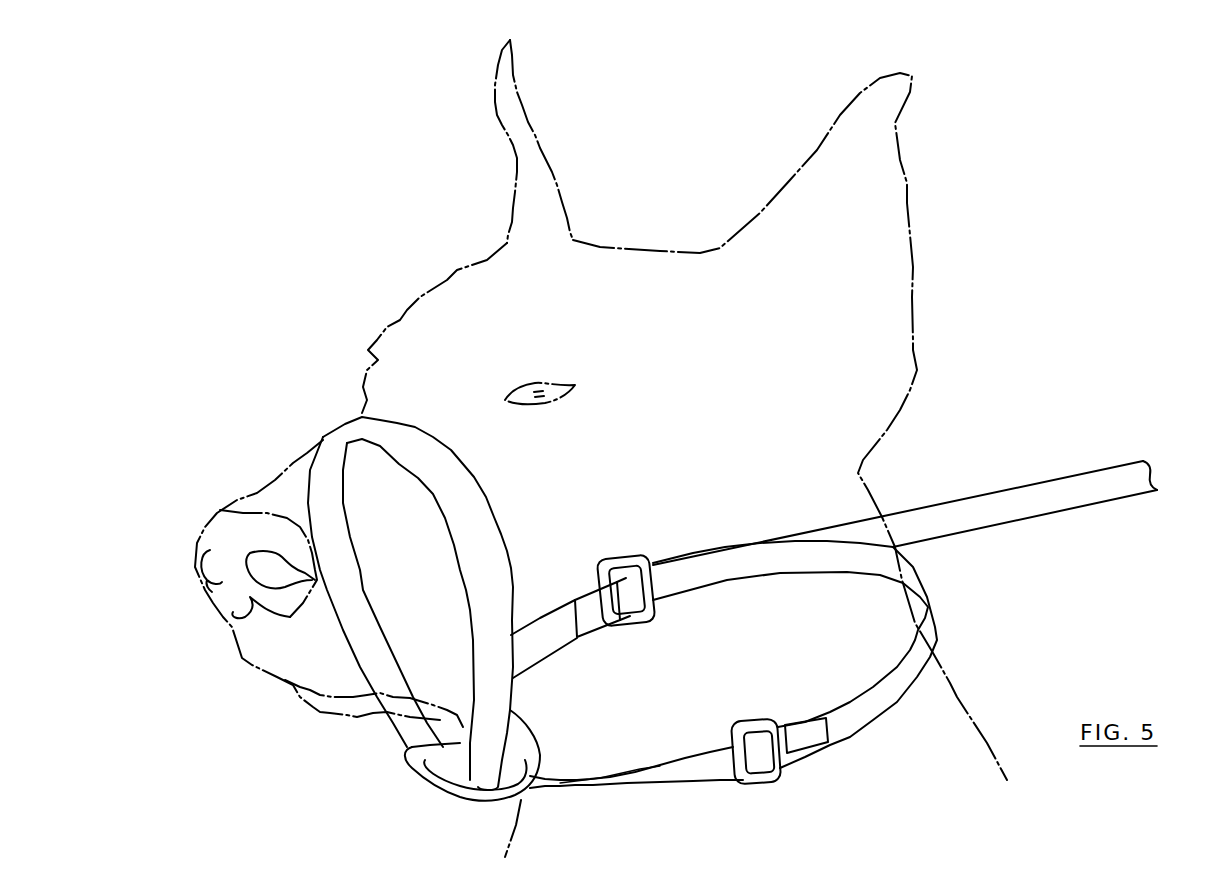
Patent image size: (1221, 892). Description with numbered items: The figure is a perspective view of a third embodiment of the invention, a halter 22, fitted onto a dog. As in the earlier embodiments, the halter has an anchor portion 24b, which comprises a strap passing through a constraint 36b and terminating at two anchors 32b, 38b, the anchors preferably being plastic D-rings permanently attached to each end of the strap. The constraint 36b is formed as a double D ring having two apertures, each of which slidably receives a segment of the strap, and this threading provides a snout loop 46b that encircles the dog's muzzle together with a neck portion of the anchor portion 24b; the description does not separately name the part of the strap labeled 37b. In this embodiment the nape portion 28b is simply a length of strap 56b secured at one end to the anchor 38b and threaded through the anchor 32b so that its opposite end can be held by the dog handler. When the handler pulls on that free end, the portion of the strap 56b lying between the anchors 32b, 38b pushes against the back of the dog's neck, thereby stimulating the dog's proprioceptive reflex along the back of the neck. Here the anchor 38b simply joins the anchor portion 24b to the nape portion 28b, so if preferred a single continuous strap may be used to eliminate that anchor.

The halter 22 is at (287, 358).
The anchor portion 24b is at (733, 680).
The nape portion 28b is at (905, 516).
The anchor 32b is at (647, 617).
The constraint 36b is at (407, 760).
The collar strap portion 37b is at (677, 763).
The anchor 38b is at (780, 769).
The snout loop 46b is at (432, 595).
The strap 56b is at (990, 493).